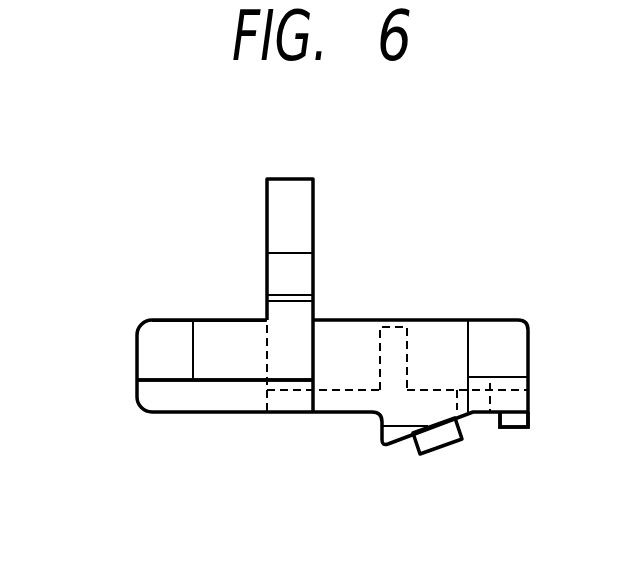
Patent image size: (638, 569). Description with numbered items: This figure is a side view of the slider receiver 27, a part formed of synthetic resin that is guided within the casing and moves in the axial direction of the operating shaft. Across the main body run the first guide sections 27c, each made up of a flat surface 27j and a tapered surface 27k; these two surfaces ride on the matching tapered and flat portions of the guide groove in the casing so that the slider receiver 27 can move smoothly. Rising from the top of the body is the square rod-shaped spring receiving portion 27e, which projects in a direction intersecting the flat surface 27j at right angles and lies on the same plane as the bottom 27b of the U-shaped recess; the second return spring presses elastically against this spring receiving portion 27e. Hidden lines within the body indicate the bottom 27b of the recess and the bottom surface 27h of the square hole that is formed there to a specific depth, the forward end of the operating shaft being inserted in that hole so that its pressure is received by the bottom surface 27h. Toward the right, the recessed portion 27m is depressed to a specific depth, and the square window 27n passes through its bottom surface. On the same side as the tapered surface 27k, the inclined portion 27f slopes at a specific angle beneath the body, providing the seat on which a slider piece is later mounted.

The slider receiver 27 is at (283, 432).
The bottom 27b is at (267, 330).
The first guide sections 27c is at (207, 338).
The spring receiving portion 27e is at (292, 228).
The inclined portion 27f is at (404, 443).
The bottom surface 27h is at (380, 360).
The flat surface 27j is at (210, 308).
The tapered surface 27k is at (188, 402).
The recessed portion 27m is at (452, 332).
The square window 27n is at (490, 412).